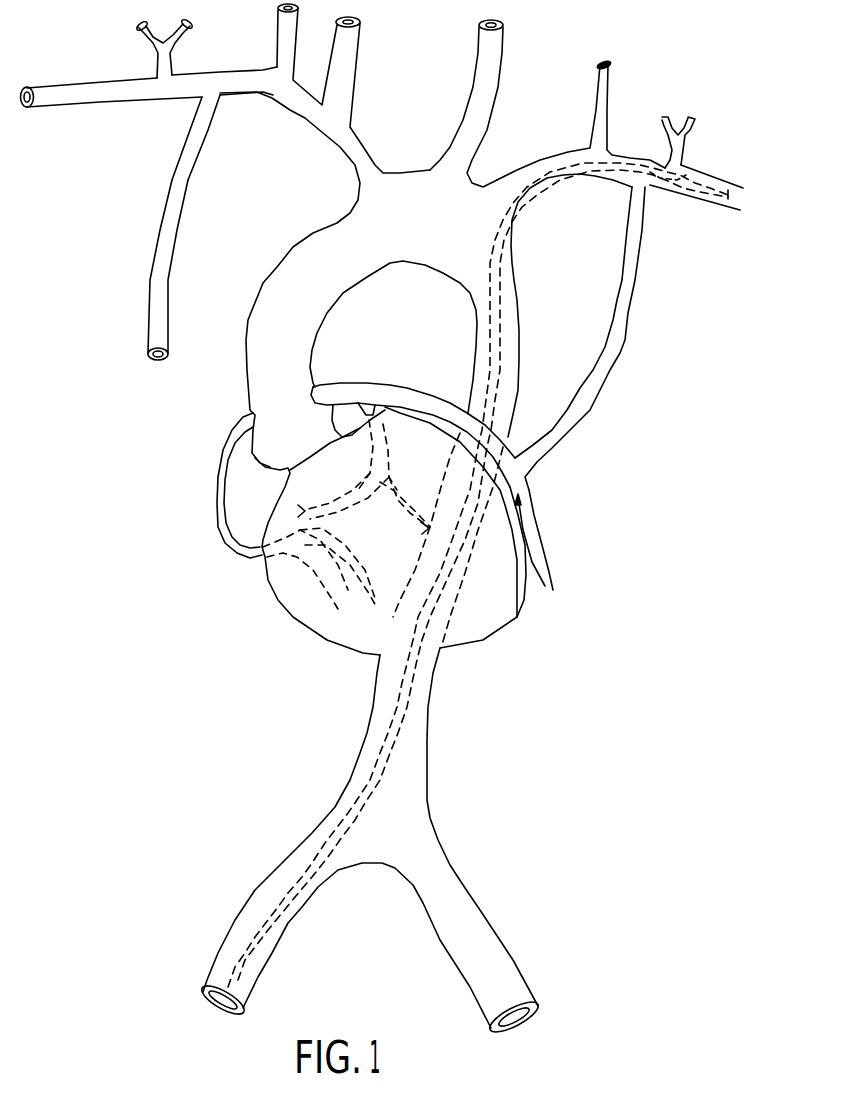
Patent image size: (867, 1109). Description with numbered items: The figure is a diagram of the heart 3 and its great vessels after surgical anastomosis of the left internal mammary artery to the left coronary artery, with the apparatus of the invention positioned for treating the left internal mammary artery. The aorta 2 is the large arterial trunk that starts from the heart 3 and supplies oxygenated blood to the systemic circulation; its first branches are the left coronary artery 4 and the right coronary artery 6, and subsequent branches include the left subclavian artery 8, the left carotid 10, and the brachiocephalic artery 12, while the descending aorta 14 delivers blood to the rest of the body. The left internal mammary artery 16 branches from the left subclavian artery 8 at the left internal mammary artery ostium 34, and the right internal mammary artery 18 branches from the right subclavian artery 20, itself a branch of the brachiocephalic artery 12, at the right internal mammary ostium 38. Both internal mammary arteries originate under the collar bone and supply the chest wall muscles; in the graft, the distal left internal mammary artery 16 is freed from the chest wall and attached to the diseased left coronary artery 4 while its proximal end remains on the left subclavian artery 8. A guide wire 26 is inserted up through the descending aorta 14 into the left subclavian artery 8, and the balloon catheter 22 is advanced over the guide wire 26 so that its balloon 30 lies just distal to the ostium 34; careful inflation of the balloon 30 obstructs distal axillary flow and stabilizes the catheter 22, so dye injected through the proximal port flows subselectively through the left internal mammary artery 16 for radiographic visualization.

The aorta 2 is at (291, 314).
The heart 3 is at (328, 632).
The left coronary artery 4 is at (397, 392).
The right coronary artery 6 is at (216, 513).
The left subclavian artery 8 is at (563, 163).
The left carotid 10 is at (485, 66).
The brachiocephalic artery 12 is at (352, 164).
The descending aorta 14 is at (428, 768).
The left internal mammary artery 16 is at (622, 350).
The right internal mammary artery 18 is at (152, 277).
The right subclavian artery 20 is at (231, 78).
The balloon catheter 22 is at (640, 158).
The guide wire 26 is at (729, 190).
The balloon 30 is at (684, 173).
The left internal mammary artery ostium 34 is at (632, 187).
The right internal mammary ostium 38 is at (212, 103).